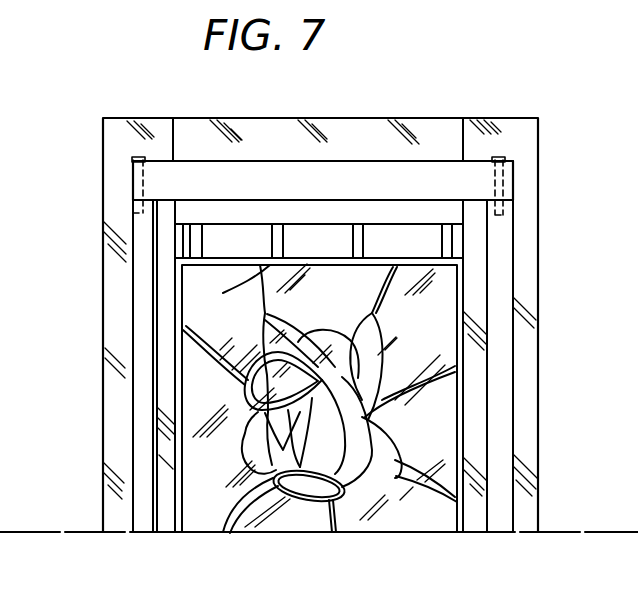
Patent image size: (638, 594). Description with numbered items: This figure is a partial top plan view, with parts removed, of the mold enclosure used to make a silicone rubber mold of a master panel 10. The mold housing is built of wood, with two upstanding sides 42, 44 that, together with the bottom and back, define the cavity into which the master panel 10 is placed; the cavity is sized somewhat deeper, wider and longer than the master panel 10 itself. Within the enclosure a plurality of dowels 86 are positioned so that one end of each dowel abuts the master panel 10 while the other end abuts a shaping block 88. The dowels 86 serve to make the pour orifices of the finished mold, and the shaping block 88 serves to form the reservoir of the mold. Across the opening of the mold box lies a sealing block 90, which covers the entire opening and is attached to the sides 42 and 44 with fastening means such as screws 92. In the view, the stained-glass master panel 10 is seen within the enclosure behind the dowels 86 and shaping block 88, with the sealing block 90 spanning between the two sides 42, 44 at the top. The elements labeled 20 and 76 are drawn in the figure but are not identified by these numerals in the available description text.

The master panel 10 is at (340, 305).
The glass panel frame 20 is at (181, 471).
The wood upstanding side 42 is at (138, 512).
The wood upstanding side 44 is at (488, 278).
The left post 76 is at (112, 455).
The dowels 86 is at (198, 259).
The shaping block 88 is at (470, 210).
The sealing block 90 is at (512, 182).
The screws 92 is at (140, 157).